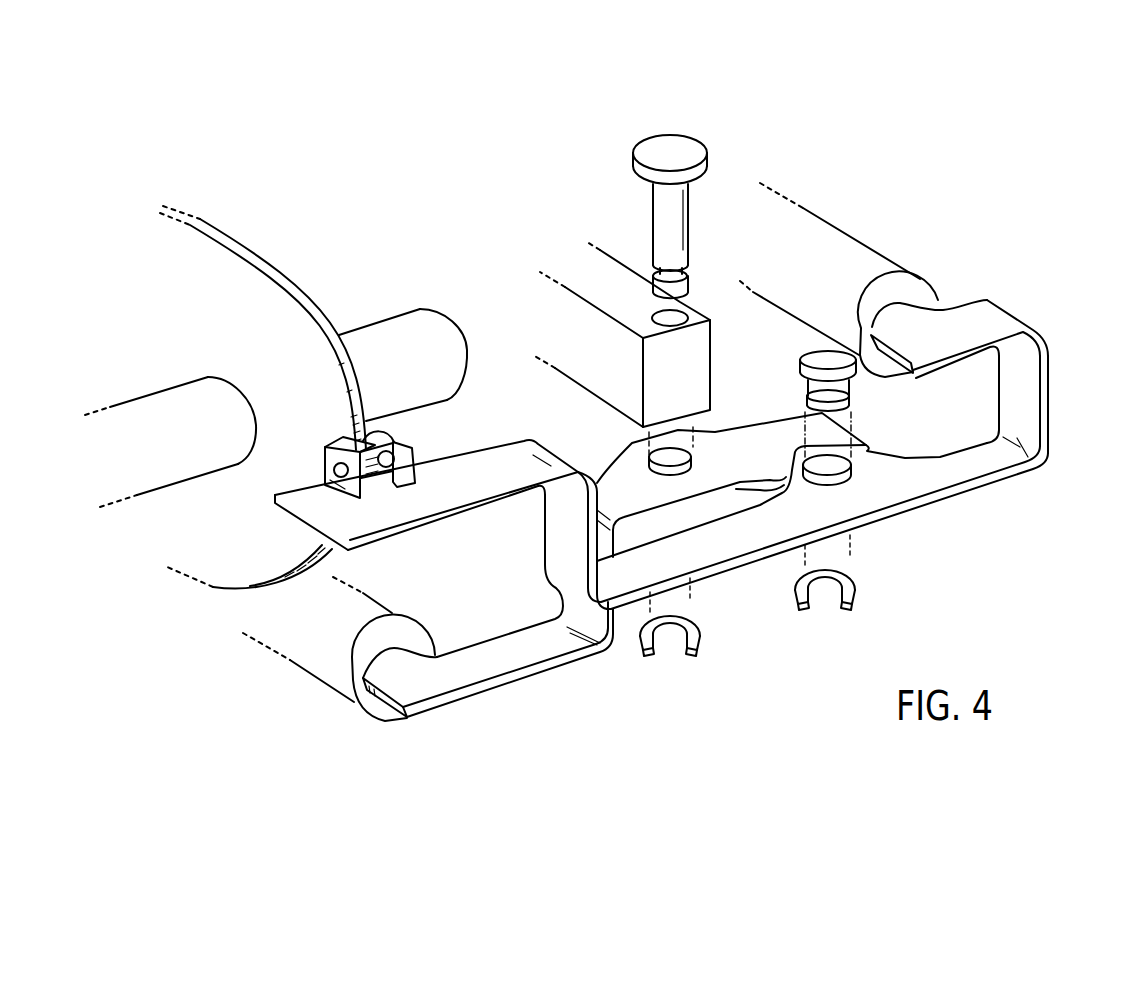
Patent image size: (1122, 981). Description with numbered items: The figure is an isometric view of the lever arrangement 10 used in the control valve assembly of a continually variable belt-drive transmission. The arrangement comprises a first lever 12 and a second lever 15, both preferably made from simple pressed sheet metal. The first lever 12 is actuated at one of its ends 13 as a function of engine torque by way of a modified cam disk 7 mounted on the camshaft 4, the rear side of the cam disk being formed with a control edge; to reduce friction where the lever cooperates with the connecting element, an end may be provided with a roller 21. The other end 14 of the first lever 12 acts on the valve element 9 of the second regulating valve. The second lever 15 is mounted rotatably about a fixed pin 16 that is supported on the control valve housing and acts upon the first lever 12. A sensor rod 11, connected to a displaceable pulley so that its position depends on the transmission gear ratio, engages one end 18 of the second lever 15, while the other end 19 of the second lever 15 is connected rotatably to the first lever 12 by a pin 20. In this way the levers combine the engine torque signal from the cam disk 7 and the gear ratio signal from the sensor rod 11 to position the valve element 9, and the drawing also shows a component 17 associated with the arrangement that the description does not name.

The camshaft 4 is at (450, 347).
The cam disk 7 is at (287, 313).
The valve element 9 is at (863, 260).
The lever arrangement 10 is at (965, 540).
The sensor rod 11 is at (320, 657).
The first lever 12 is at (1017, 448).
The end of first lever 13 is at (322, 457).
The other end of first lever 14 is at (910, 290).
The second lever 15 is at (610, 627).
The fixed pin 16 is at (677, 220).
The block 17 is at (700, 357).
The end of second lever 18 is at (440, 707).
The other end of second lever 19 is at (848, 422).
The pin 20 is at (803, 383).
The roller 21 is at (400, 447).